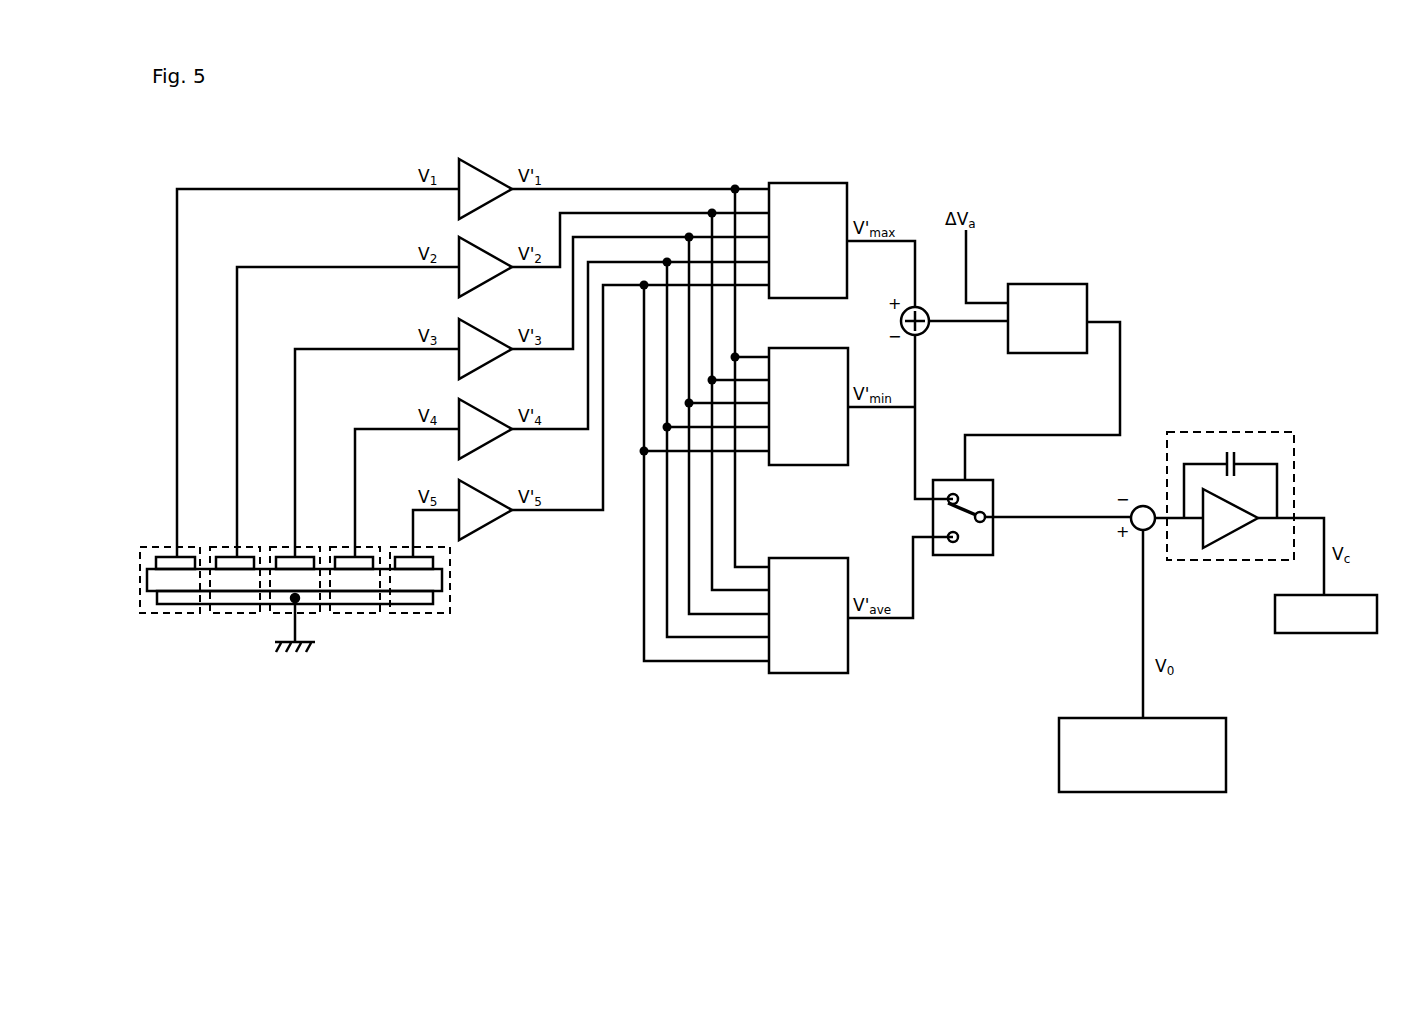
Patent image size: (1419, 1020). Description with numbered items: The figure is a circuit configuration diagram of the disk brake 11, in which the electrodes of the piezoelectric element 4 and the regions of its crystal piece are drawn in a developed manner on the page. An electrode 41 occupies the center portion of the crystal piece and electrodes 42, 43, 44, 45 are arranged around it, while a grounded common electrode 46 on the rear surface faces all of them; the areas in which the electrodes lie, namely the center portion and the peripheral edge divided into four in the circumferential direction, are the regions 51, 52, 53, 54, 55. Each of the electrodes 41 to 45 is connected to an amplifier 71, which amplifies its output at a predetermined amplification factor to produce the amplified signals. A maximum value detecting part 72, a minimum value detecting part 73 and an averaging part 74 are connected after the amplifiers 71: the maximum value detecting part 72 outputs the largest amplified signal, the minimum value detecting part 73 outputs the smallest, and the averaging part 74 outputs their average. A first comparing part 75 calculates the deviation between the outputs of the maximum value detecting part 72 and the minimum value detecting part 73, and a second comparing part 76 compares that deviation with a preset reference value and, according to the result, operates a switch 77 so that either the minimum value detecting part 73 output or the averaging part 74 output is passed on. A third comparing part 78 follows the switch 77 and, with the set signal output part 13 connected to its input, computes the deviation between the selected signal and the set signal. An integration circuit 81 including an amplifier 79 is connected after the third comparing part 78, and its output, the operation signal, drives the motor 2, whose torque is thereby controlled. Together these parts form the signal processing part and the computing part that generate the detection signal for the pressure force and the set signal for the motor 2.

The motor 2 is at (1322, 633).
The piezoelectric element 4 is at (176, 700).
The disk brake 11 is at (955, 772).
The set signal output part 13 is at (1226, 750).
The electrode 41 is at (167, 548).
The electrode 42 is at (228, 548).
The electrode 43 is at (287, 548).
The electrode 44 is at (346, 548).
The electrode 45 is at (407, 548).
The common electrode 46 is at (247, 600).
The region 51 is at (170, 613).
The region 52 is at (237, 613).
The region 53 is at (307, 613).
The region 54 is at (355, 613).
The region 55 is at (425, 613).
The amplifier 71 is at (489, 175).
The maximum value detecting part 72 is at (810, 182).
The minimum value detecting part 73 is at (805, 465).
The averaging part 74 is at (805, 673).
The first comparing part 75 is at (925, 331).
The second comparing part 76 is at (1043, 284).
The switch 77 is at (993, 541).
The third comparing part 78 is at (1139, 505).
The amplifier 79 is at (1224, 537).
The integration circuit 81 is at (1263, 518).